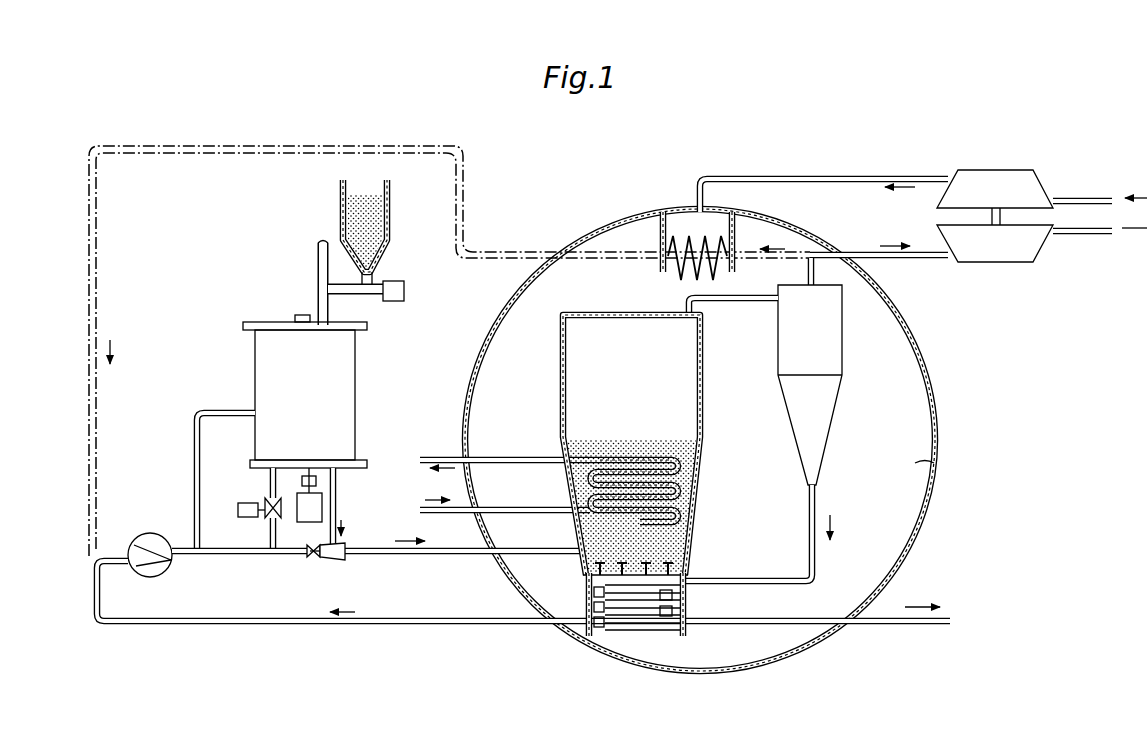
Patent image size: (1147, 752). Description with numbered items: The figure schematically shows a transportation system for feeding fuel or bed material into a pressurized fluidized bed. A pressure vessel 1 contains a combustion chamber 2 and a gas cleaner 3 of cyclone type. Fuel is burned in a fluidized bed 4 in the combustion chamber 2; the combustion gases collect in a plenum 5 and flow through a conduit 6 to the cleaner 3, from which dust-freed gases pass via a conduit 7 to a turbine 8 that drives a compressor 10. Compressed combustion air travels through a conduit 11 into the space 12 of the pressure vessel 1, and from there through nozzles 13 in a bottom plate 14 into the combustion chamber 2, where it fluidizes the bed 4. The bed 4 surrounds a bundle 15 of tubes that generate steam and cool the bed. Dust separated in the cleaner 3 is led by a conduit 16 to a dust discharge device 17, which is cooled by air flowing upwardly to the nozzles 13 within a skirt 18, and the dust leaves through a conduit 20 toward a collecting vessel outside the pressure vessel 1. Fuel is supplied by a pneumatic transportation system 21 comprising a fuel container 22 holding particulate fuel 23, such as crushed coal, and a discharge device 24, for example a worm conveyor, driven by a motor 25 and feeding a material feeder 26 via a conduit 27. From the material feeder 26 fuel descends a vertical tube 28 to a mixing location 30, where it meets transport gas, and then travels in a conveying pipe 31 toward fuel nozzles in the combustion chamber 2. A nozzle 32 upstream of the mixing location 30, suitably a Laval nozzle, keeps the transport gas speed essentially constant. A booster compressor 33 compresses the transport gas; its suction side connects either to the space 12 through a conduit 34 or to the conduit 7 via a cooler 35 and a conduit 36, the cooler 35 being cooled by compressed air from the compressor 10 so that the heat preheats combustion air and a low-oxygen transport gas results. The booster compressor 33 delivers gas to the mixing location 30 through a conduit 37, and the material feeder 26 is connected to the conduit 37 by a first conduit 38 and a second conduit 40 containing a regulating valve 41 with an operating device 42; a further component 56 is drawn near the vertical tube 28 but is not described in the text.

The pressure vessel 1 is at (934, 354).
The combustion chamber 2 is at (625, 429).
The gas cleaner 3 is at (842, 356).
The fluidized bed 4 is at (690, 537).
The plenum 5 is at (630, 340).
The conduit 6 is at (738, 302).
The conduit 7 is at (906, 259).
The turbine 8 is at (1010, 255).
The compressor 10 is at (995, 180).
The conduit 11 is at (900, 176).
The space 12 is at (934, 463).
The nozzles 13 is at (688, 568).
The bottom plate 14 is at (590, 584).
The bundle of tubes 15 is at (690, 478).
The conduit 16 is at (774, 533).
The dust discharge device 17 is at (690, 598).
The skirt 18 is at (688, 630).
The conduit 20 is at (900, 624).
The pneumatic transportation system 21 is at (236, 268).
The fuel container 22 is at (342, 223).
The particulate fuel 23 is at (346, 218).
The discharge device 24 is at (370, 292).
The motor 25 is at (404, 291).
The material feeder 26 is at (364, 366).
The conduit 27 is at (320, 278).
The vertical tube 28 is at (338, 490).
The mixing location 30 is at (340, 558).
The conveying pipe 31 is at (435, 554).
The nozzle 32 is at (312, 558).
The booster compressor 33 is at (147, 533).
The conduit 34 is at (313, 626).
The cooler 35 is at (682, 232).
The conduit 36 is at (232, 146).
The conduit 37 is at (222, 554).
The first conduit 38 is at (195, 430).
The second conduit 40 is at (270, 492).
The regulating valve 41 is at (268, 520).
The operating device 42 is at (238, 511).
The dosing device 56 is at (322, 508).